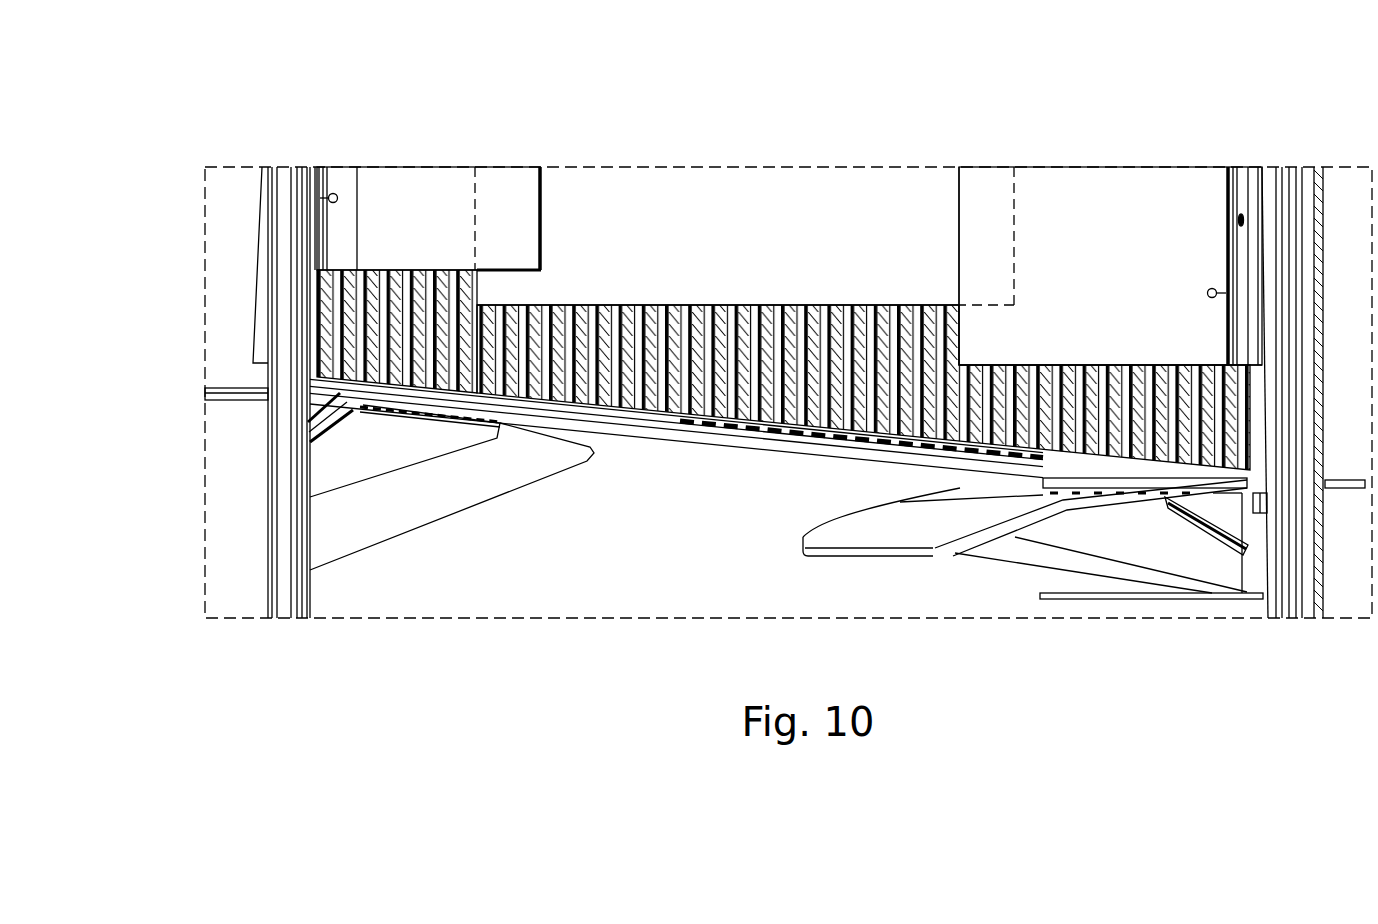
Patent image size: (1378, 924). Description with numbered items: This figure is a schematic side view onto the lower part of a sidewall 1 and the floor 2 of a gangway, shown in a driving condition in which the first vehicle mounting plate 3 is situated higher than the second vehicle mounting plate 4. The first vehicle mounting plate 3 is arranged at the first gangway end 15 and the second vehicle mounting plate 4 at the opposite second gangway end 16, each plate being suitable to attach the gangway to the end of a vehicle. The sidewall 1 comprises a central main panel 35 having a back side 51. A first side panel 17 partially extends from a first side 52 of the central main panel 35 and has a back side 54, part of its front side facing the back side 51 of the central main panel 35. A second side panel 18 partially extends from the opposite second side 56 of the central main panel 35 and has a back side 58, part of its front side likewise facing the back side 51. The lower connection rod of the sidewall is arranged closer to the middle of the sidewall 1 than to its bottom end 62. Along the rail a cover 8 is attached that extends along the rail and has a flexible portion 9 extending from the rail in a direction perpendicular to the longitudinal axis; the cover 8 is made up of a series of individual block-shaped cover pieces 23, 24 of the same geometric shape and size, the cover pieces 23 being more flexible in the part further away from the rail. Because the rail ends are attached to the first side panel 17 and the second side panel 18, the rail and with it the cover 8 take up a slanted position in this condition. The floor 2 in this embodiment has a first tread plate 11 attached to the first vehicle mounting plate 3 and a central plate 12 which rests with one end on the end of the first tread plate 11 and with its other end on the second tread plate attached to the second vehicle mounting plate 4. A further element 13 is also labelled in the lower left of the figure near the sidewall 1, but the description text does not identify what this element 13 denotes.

The sidewall 1 is at (775, 120).
The floor 2 is at (759, 500).
The first vehicle mounting plate 3 is at (1248, 210).
The second vehicle mounting plate 4 is at (332, 190).
The cover 8 is at (630, 405).
The flexible portion 9 is at (703, 405).
The first tread plate 11 is at (1193, 495).
The central plate 12 is at (785, 428).
The bracket 13 is at (352, 412).
The first gangway end 15 is at (1195, 192).
The second gangway end 16 is at (362, 198).
The first side panel 17 is at (1070, 188).
The second side panel 18 is at (417, 194).
The cover piece 23 is at (862, 402).
The cover piece 24 is at (402, 355).
The central main panel 35 is at (547, 190).
The back side of the central main panel 51 is at (841, 190).
The first side of the central main panel 52 is at (1021, 258).
The back side of the first side panel 54 is at (1133, 188).
The second side of the central main panel 56 is at (465, 278).
The back side of the second side panel 58 is at (466, 198).
The bottom end of the sidewall 62 is at (360, 283).